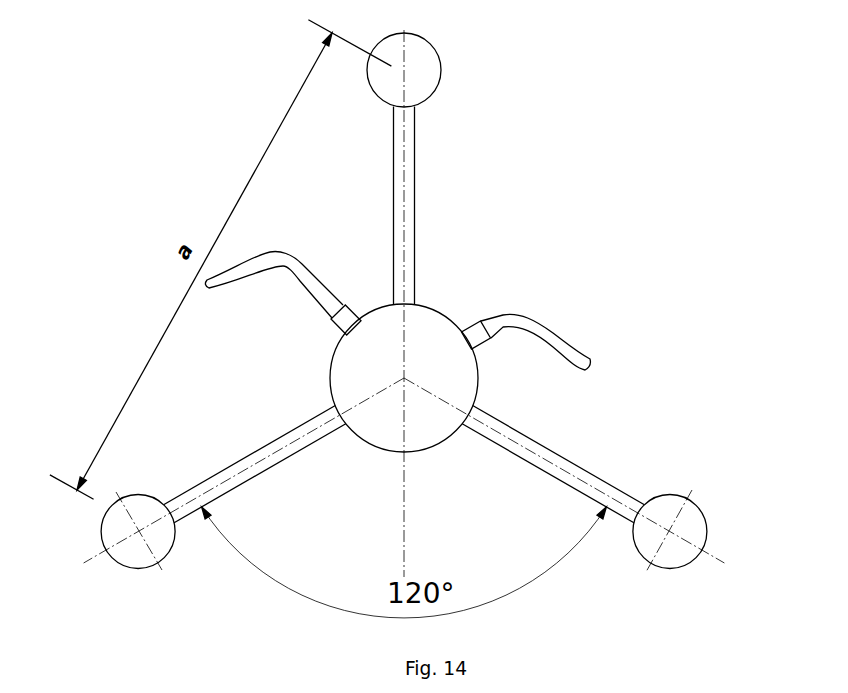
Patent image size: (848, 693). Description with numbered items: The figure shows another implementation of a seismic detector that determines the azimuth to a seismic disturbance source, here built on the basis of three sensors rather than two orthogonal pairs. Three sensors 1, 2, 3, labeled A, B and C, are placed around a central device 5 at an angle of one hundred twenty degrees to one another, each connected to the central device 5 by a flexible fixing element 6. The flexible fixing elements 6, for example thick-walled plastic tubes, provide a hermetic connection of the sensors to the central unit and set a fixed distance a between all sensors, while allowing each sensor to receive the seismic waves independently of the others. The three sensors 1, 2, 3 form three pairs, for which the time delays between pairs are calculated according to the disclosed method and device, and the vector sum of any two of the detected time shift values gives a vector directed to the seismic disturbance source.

The sensor 1 is at (425, 63).
The sensor 2 is at (120, 497).
The sensor 3 is at (678, 525).
The central device 5 is at (433, 313).
The flexible fixing element 6 is at (405, 208).